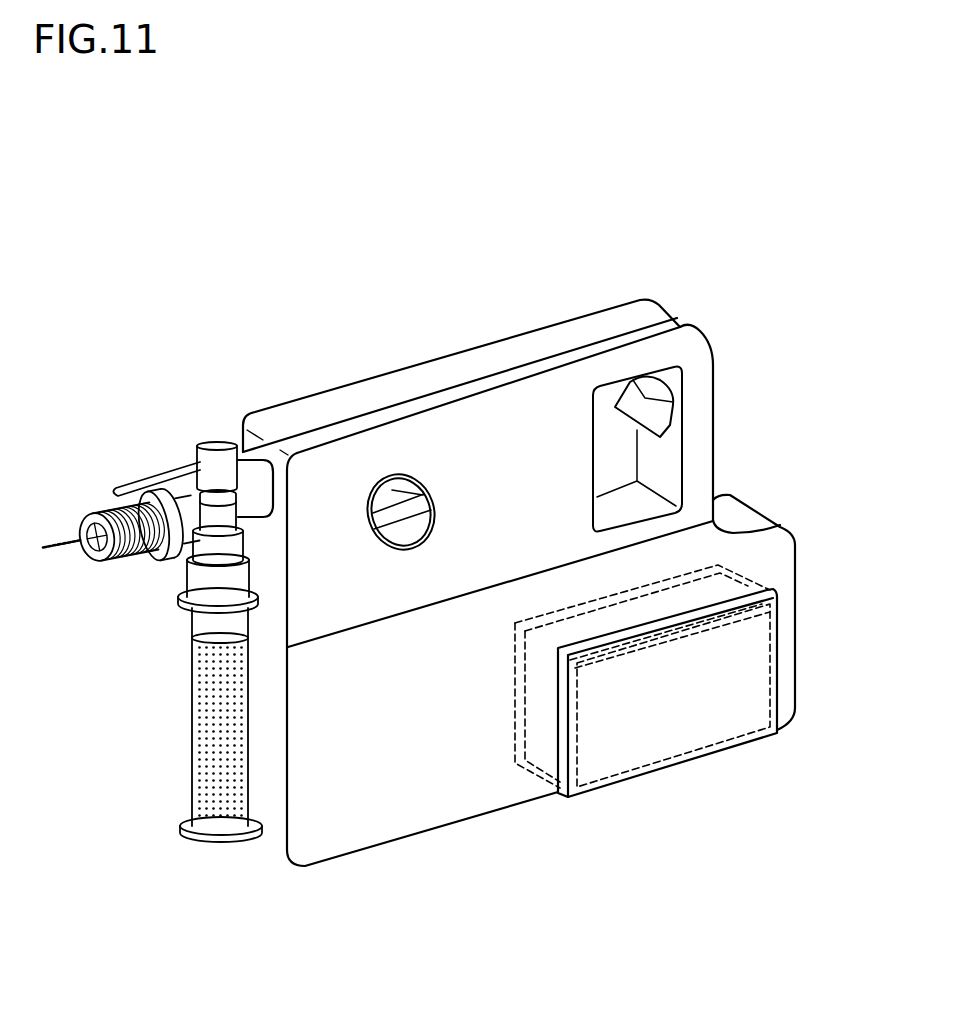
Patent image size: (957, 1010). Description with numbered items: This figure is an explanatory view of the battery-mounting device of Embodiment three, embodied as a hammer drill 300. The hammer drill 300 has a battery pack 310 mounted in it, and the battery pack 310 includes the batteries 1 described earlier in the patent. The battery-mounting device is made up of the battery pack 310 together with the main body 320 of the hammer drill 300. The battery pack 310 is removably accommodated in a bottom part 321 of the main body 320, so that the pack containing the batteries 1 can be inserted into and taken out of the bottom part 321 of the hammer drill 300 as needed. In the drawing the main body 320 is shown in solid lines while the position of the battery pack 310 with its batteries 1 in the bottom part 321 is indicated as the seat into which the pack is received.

The hammer drill 300 is at (481, 268).
The battery pack 310 is at (528, 777).
The main body 320 is at (365, 773).
The bottom part 321 is at (563, 785).
The battery 1 is at (693, 712).